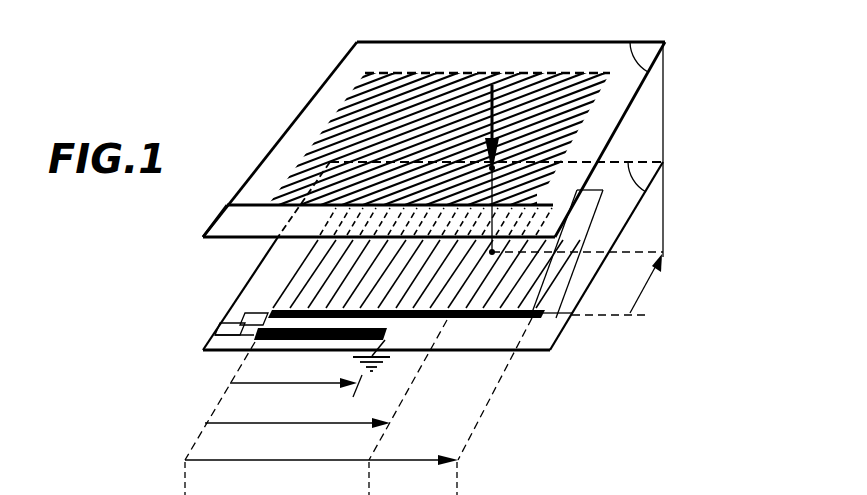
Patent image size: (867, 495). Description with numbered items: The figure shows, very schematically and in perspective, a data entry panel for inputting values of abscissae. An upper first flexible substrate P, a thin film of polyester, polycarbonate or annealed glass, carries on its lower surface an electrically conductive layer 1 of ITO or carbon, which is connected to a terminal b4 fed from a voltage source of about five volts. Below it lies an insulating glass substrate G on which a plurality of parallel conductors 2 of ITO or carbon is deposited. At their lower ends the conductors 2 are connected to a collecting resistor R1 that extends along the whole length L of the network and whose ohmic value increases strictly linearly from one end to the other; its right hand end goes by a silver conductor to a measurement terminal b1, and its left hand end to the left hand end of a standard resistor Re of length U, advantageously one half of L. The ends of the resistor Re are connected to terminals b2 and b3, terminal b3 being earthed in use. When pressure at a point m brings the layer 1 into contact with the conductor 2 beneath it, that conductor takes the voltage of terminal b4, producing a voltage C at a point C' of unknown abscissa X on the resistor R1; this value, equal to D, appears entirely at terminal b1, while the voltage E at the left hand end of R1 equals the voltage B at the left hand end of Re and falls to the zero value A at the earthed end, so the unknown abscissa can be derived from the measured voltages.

The electrically conductive layer 1 is at (382, 120).
The parallel conductors 2 is at (313, 264).
The point of pressure m is at (492, 167).
The first flexible substrate P is at (658, 53).
The insulating substrate G is at (655, 173).
The terminal b4 is at (227, 205).
The terminal b2 is at (222, 323).
The terminal b3 is at (387, 350).
The measurement terminal b1 is at (577, 318).
The voltage E is at (258, 322).
The voltage B is at (252, 340).
The standard resistor Re is at (262, 342).
The collecting resistor R1 is at (502, 320).
The voltage A is at (377, 348).
The point c' C' is at (417, 390).
The voltage D is at (435, 267).
The dimension Y is at (577, 177).
The length of standard resistor Re U is at (293, 373).
The unknown abscissa X is at (297, 413).
The length of collecting resistor R1 L is at (321, 465).